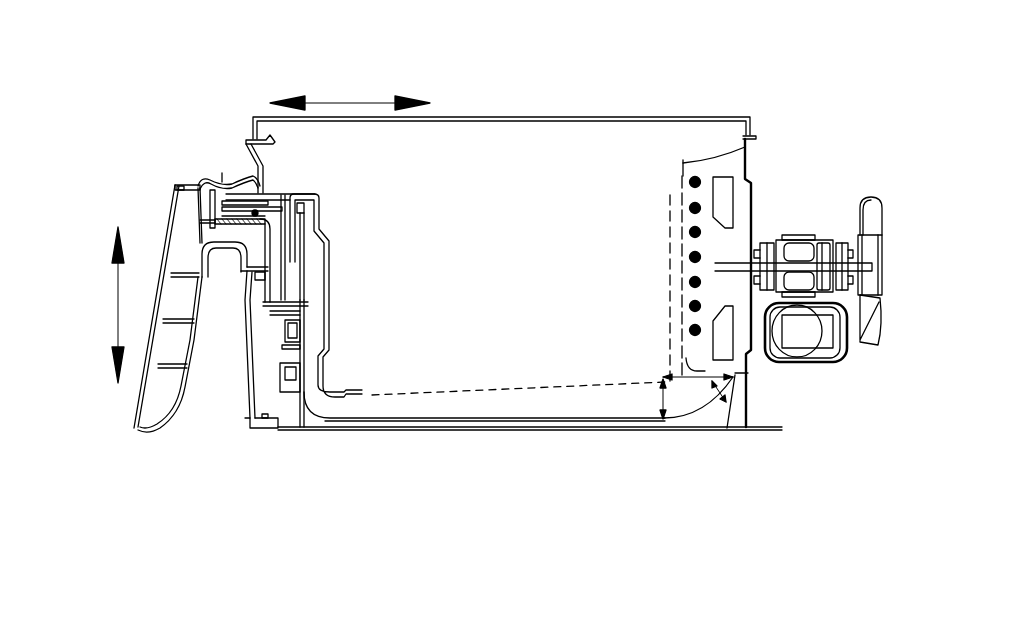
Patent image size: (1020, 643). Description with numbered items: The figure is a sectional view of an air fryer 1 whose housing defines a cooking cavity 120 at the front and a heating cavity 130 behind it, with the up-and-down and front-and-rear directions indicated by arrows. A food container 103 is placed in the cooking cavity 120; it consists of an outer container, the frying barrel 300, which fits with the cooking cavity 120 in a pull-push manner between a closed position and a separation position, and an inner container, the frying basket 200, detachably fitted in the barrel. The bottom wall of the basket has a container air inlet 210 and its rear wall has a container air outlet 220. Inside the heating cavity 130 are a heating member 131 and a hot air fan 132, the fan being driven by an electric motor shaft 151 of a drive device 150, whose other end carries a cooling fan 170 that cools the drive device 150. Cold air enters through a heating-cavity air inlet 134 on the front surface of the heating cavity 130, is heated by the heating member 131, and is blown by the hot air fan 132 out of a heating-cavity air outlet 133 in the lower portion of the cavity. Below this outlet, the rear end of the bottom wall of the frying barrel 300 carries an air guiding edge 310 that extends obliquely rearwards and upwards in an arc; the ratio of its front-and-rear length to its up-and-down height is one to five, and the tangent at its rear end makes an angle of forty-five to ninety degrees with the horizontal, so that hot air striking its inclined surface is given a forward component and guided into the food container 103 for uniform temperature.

The air fryer 1 is at (523, 32).
The food container 103 is at (226, 455).
The cooking cavity 120 is at (468, 142).
The heating cavity 130 is at (733, 167).
The heating member 131 is at (689, 180).
The hot air fan 132 is at (731, 206).
The heating-cavity air outlet 133 is at (713, 372).
The heating-cavity air inlet 134 is at (682, 210).
The drive device 150 is at (808, 237).
The electric motor shaft 151 is at (824, 268).
The cooling fan 170 is at (873, 252).
The frying basket 200 is at (318, 398).
The container air inlet 210 is at (502, 390).
The container air outlet 220 is at (668, 272).
The frying barrel 300 is at (410, 421).
The air guiding edge 310 is at (703, 412).